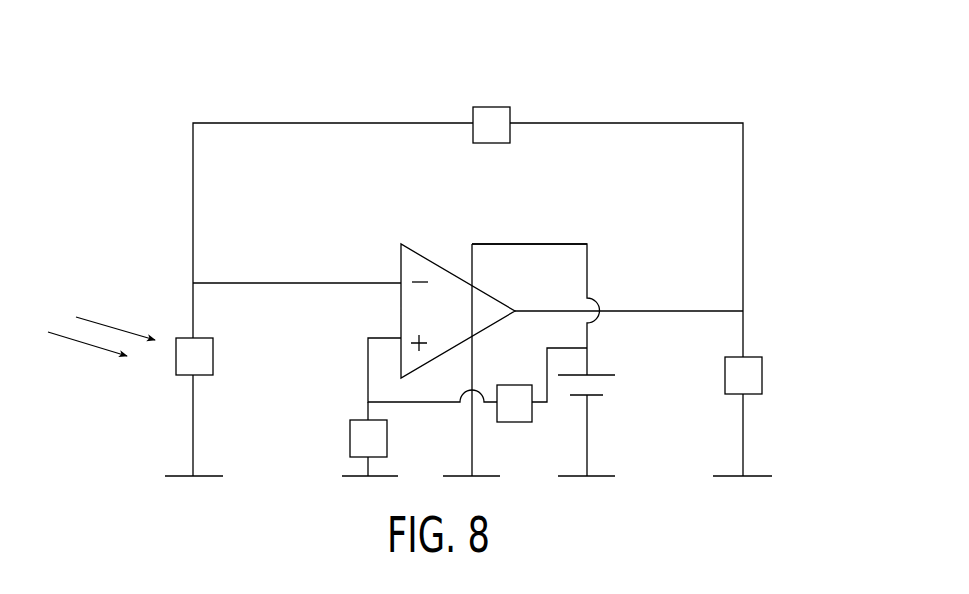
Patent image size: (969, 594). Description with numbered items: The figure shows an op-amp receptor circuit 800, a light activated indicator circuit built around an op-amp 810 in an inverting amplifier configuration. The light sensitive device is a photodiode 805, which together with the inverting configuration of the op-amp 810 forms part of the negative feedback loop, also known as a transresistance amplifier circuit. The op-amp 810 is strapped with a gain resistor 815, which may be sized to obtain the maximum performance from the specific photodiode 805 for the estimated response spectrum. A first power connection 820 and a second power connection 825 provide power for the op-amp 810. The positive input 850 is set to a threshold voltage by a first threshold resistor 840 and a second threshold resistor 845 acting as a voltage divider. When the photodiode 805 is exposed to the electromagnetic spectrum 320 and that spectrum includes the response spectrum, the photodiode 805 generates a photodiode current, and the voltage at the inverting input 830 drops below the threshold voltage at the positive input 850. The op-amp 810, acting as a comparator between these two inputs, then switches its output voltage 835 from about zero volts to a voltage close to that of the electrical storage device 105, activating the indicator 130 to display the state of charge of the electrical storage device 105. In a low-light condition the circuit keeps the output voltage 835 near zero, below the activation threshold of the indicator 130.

The op-amp receptor circuit 800 is at (745, 85).
The gain resistor 815 is at (490, 106).
The photodiode 805 is at (213, 358).
The electromagnetic spectrum 320 is at (133, 318).
The inverting input 830 is at (393, 273).
The positive input 850 is at (392, 330).
The op-amp 810 is at (426, 258).
The first power connection 820 is at (533, 244).
The output voltage 835 is at (533, 292).
The second power connection 825 is at (470, 433).
The first threshold resistor 840 is at (349, 438).
The second threshold resistor 845 is at (515, 422).
The electrical storage device 105 is at (612, 383).
The indicator 130 is at (762, 378).